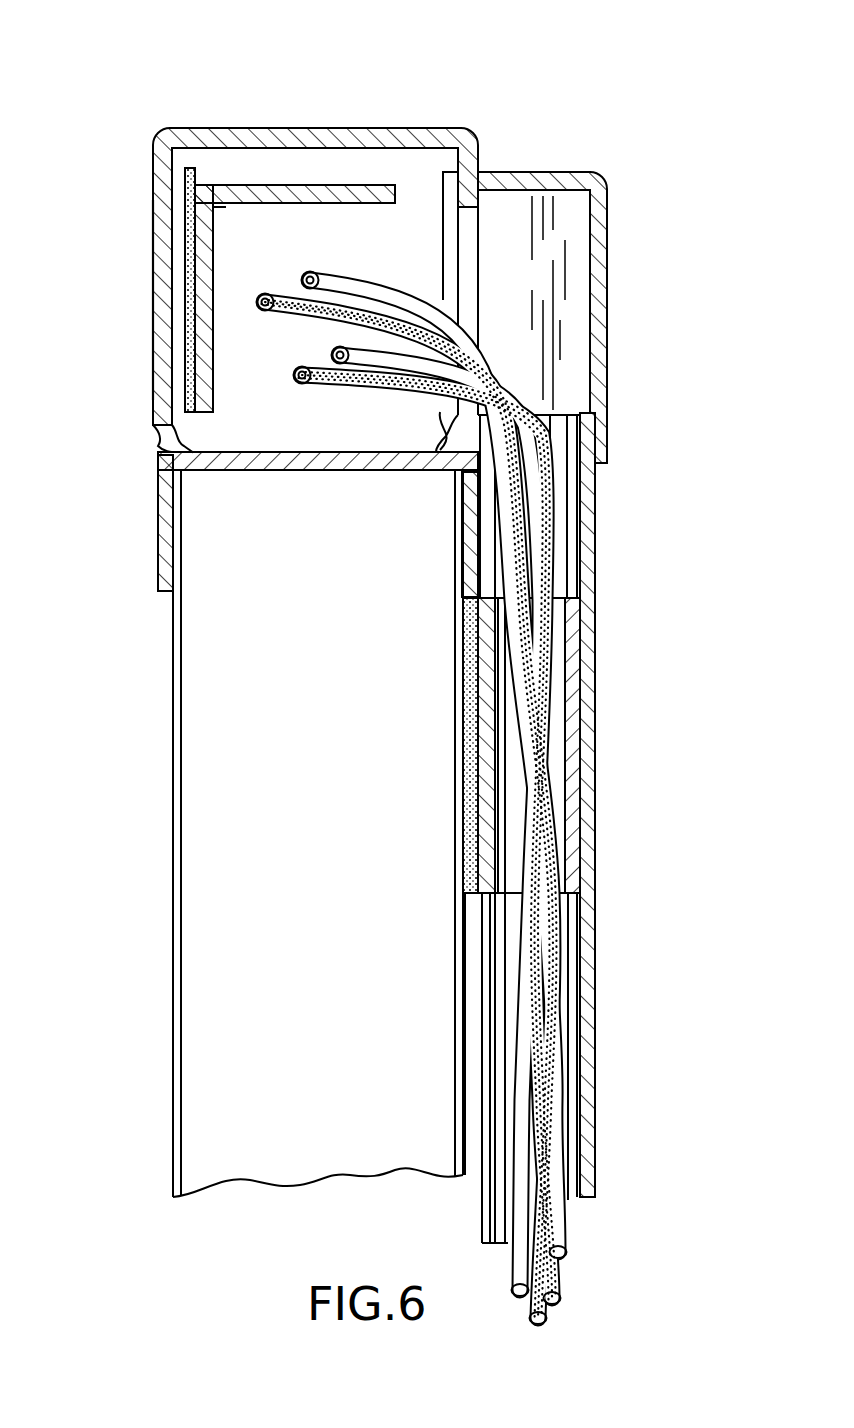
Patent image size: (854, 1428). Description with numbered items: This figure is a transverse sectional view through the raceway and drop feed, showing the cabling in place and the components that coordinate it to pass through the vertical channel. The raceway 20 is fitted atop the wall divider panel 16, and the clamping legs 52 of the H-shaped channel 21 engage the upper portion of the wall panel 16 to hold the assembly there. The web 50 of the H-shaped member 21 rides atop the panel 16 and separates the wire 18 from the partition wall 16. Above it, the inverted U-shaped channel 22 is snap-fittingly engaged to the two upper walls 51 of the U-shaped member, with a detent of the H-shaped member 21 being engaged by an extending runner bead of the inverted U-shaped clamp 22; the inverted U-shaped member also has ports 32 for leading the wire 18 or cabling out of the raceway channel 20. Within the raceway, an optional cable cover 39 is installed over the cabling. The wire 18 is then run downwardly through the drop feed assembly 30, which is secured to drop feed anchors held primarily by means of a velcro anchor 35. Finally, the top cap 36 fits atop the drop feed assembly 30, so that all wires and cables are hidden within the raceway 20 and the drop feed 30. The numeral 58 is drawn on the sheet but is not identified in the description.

The wall divider panel 16 is at (358, 926).
The wire 18 is at (508, 368).
The raceway 20 is at (462, 92).
The H-shaped channel 21 is at (341, 472).
The inverted U-shaped channel 22 is at (376, 127).
The drop feed assembly 30 is at (597, 527).
The ports 32 is at (470, 238).
The velcro anchor 35 is at (473, 770).
The top cap 36 is at (607, 190).
The cable cover 39 is at (345, 205).
The web 50 is at (280, 472).
The upper walls 51 is at (185, 174).
The clamping legs 52 is at (157, 517).
The cap side wall 58 is at (153, 268).